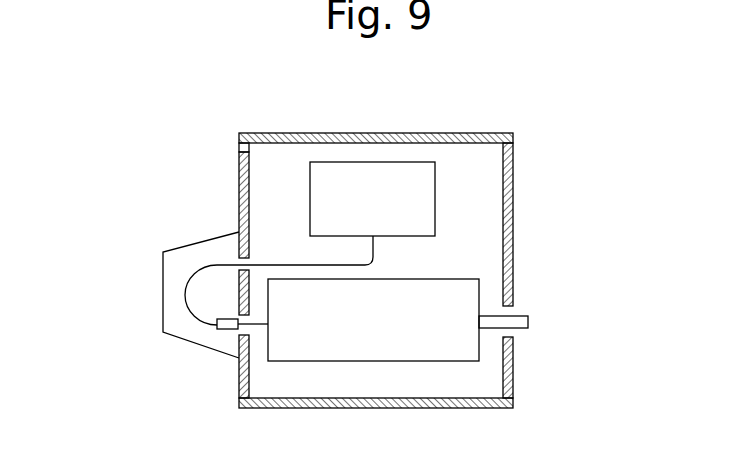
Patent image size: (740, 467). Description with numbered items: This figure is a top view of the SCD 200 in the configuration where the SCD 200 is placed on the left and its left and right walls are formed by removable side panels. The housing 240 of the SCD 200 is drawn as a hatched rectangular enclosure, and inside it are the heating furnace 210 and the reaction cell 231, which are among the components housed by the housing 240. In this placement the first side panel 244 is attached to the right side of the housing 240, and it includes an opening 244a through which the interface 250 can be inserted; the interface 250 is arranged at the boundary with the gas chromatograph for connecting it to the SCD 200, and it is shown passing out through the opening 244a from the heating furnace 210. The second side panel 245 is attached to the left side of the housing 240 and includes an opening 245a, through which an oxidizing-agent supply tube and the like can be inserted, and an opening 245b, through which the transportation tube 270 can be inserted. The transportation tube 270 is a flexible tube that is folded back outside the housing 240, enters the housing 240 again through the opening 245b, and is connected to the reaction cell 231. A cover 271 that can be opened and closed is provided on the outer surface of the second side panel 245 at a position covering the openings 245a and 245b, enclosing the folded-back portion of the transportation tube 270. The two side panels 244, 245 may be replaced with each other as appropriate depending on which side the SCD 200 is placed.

The SCD 200 is at (178, 108).
The heating furnace 210 is at (337, 362).
The reaction cell 231 is at (377, 160).
The housing 240 is at (460, 133).
The first side panel 244 is at (515, 170).
The opening 244a is at (518, 336).
The second side panel 245 is at (238, 170).
The opening 245a is at (238, 332).
The opening 245b is at (238, 262).
The interface 250 is at (522, 312).
The transportation tube 270 is at (185, 300).
The cover 271 is at (163, 270).